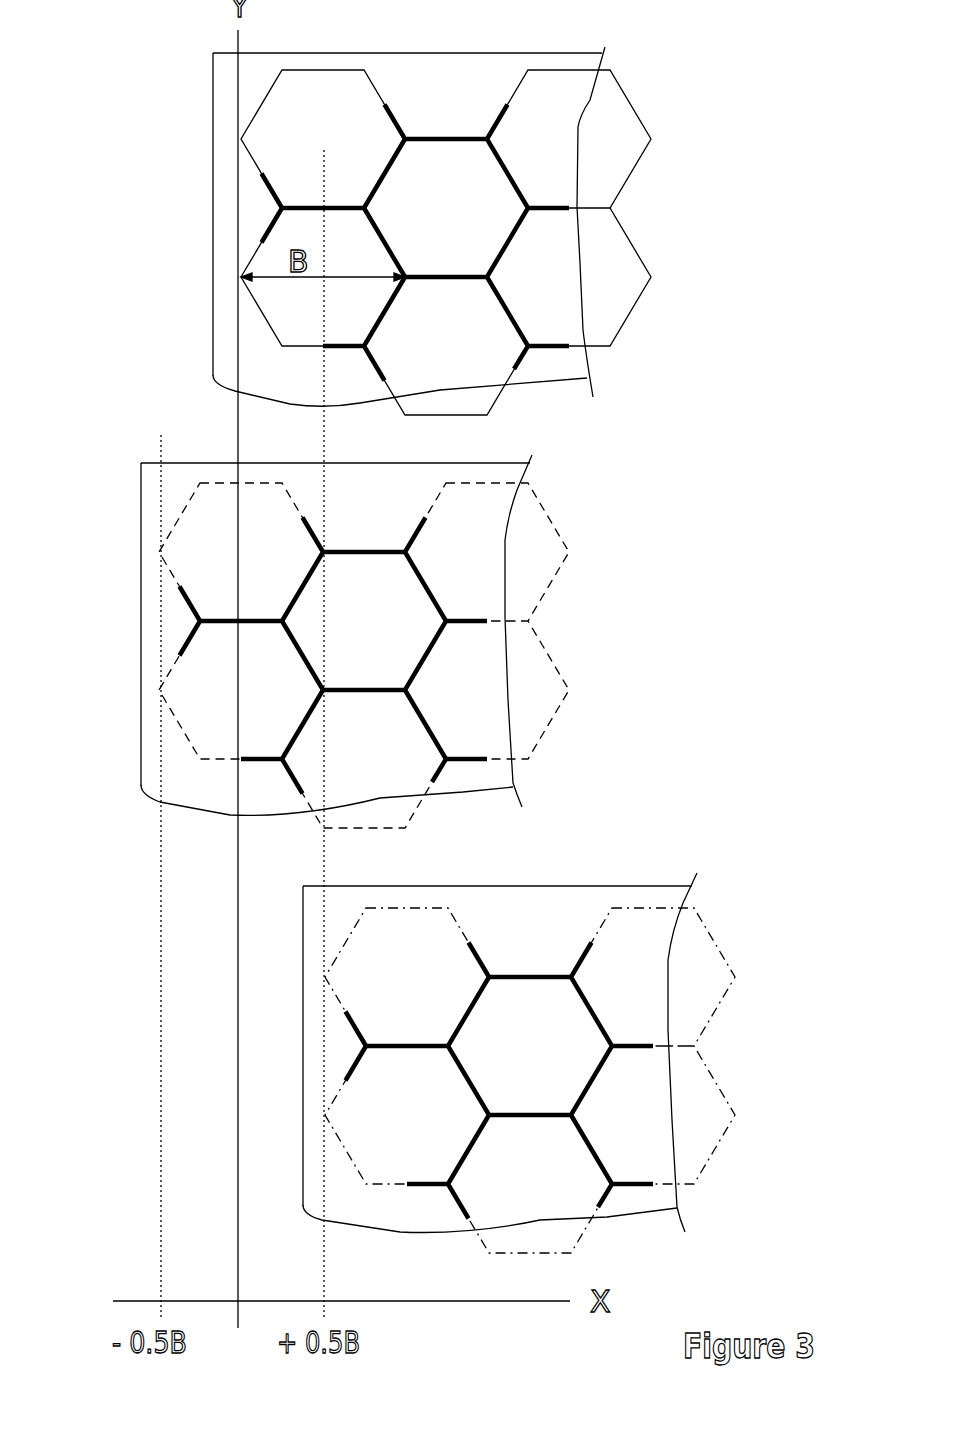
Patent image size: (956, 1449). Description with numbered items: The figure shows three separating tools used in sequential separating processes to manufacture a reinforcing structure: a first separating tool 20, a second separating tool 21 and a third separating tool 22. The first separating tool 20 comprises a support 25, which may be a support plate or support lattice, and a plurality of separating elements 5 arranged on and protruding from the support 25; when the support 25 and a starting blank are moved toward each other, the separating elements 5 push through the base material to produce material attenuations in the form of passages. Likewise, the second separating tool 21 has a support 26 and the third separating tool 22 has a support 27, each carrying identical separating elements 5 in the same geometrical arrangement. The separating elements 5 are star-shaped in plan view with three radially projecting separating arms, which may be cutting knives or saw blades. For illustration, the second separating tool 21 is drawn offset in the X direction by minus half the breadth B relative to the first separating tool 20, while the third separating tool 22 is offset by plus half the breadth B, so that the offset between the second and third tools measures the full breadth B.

The separating elements 5 is at (393, 117).
The first separating tool 20 is at (203, 103).
The second separating tool 21 is at (128, 512).
The third separating tool 22 is at (288, 973).
The support 25 is at (213, 283).
The support 26 is at (140, 687).
The support 27 is at (303, 1142).